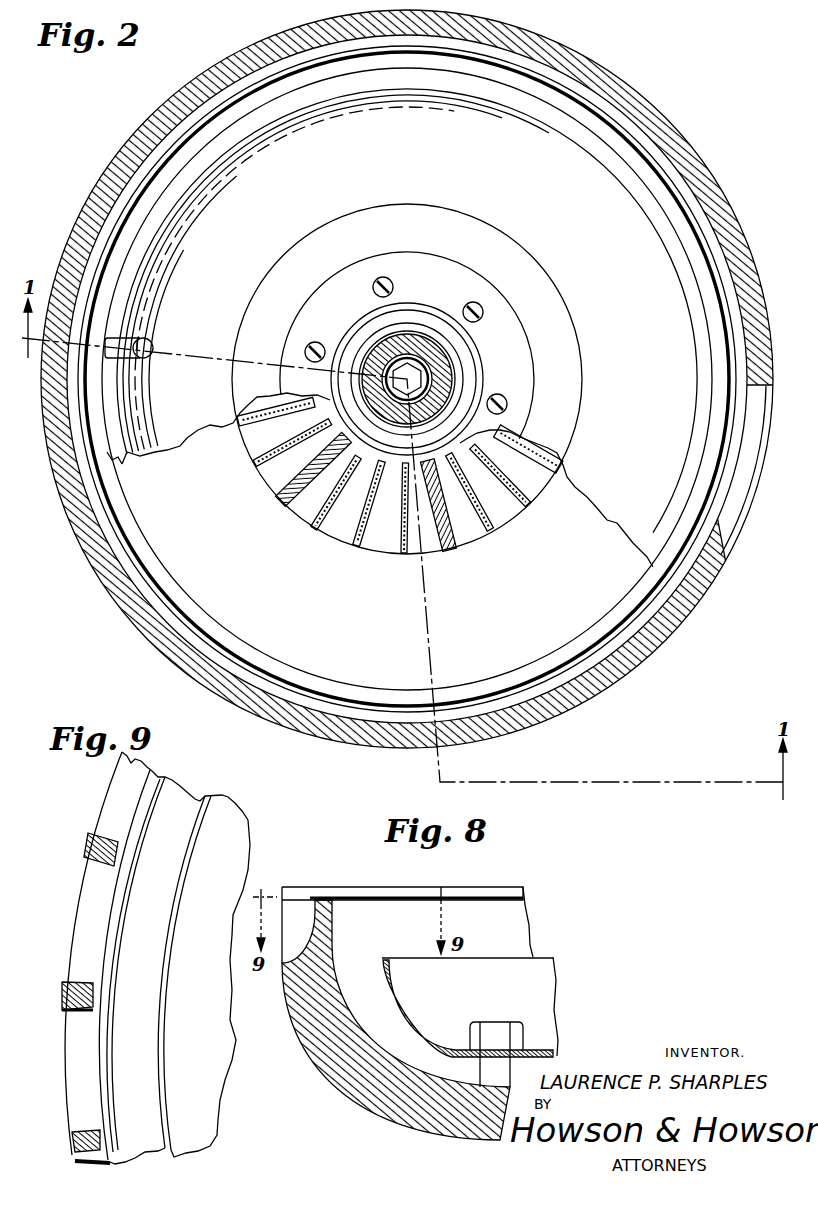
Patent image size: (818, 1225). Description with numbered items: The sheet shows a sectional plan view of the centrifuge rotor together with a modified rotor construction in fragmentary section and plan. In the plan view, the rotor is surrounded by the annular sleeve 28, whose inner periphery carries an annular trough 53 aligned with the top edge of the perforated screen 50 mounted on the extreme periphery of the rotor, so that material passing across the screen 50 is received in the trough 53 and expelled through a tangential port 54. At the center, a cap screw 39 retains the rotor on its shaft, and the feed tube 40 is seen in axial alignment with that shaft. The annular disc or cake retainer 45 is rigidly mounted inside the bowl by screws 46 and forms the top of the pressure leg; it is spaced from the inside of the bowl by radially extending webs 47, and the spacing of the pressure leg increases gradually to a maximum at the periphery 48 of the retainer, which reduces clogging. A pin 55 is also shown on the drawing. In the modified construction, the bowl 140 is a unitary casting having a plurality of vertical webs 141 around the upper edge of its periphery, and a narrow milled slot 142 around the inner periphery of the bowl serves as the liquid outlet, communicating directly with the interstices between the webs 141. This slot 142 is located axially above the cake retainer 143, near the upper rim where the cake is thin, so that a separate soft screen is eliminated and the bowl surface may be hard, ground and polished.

In FIG. 2, the annular sleeve 28 is at (681, 120).
In FIG. 2, the cap screw 39 is at (409, 362).
In FIG. 2, the feed tube 40 is at (433, 333).
In FIG. 2, the cake retainer 45 is at (190, 432).
In FIG. 2, the screws 46 is at (315, 342).
In FIG. 2, the radially extending webs 47 is at (268, 462).
In FIG. 2, the periphery of the retainer 48 is at (124, 460).
In FIG. 2, the perforated screen 50 is at (116, 222).
In FIG. 2, the annular trough 53 is at (141, 128).
In FIG. 2, the tangential port 54 is at (745, 472).
In FIG. 2, the pin 55 is at (150, 342).
In FIG. 9, the bowl 140 is at (86, 942).
In FIG. 8, the bowl 140 is at (367, 1067).
In FIG. 9, the vertical webs 141 is at (88, 850).
In FIG. 8, the vertical webs 141 is at (293, 897).
In FIG. 9, the milled slot 142 is at (103, 1078).
In FIG. 8, the milled slot 142 is at (525, 898).
In FIG. 9, the cake retainer 143 is at (207, 1111).
In FIG. 8, the cake retainer 143 is at (545, 979).